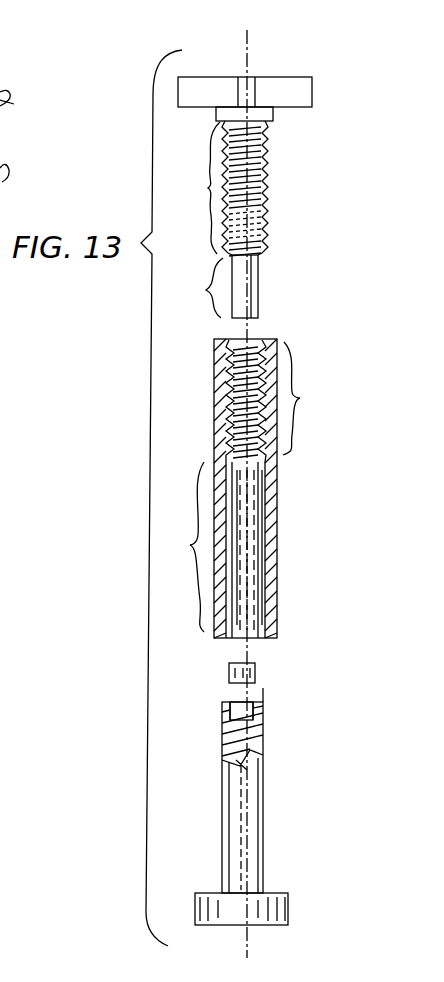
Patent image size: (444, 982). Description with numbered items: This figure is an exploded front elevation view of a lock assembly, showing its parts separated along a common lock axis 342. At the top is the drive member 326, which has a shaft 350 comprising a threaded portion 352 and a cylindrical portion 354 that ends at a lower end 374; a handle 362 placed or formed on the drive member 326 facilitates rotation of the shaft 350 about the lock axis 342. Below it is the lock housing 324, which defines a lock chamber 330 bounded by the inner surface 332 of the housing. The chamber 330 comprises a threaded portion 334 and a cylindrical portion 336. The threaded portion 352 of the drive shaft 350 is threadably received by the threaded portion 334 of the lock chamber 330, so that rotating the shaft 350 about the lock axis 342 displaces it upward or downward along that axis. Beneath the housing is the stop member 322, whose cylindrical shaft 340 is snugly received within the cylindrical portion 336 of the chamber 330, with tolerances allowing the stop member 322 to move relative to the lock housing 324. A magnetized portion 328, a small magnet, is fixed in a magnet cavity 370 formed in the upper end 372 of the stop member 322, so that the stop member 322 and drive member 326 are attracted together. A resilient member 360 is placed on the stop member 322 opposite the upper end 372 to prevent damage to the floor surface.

The lock axis 342 is at (252, 38).
The handle 362 is at (303, 92).
The drive member 326 is at (264, 184).
The threaded portion 352 is at (206, 188).
The shaft 350 is at (268, 226).
The lower end 374 is at (272, 313).
The cylindrical portion 354 is at (204, 290).
The lock housing 324 is at (278, 497).
The threaded portion 334 is at (302, 398).
The cylindrical portion 336 is at (190, 545).
The lock chamber 330 is at (259, 512).
The inner surface 332 is at (249, 586).
The magnetized portion 328 is at (266, 672).
The stop member 322 is at (263, 826).
The magnet cavity 370 is at (238, 703).
The upper end 372 is at (276, 712).
The cylindrical shaft 340 is at (238, 818).
The resilient member 360 is at (275, 912).